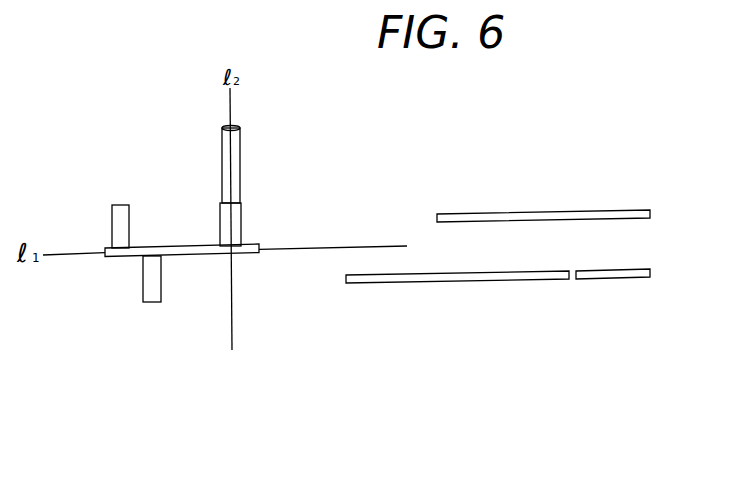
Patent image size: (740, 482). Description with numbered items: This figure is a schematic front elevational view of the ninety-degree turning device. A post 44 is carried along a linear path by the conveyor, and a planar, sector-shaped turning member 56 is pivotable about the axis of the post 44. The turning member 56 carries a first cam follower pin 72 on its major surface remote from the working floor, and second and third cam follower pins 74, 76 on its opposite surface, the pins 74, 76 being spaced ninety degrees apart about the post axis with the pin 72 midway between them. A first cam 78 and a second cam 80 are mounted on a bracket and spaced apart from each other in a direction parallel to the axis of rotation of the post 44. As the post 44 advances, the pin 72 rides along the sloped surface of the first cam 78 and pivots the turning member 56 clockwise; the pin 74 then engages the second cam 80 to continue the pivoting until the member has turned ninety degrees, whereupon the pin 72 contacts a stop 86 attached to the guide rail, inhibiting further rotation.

The post 44 is at (237, 185).
The turning member 56 is at (193, 255).
The first cam follower pin 72 is at (146, 288).
The second cam follower pin 74 is at (227, 223).
The third cam follower pin 76 is at (115, 222).
The first cam 78 is at (406, 280).
The second cam 80 is at (612, 208).
The stop 86 is at (617, 277).